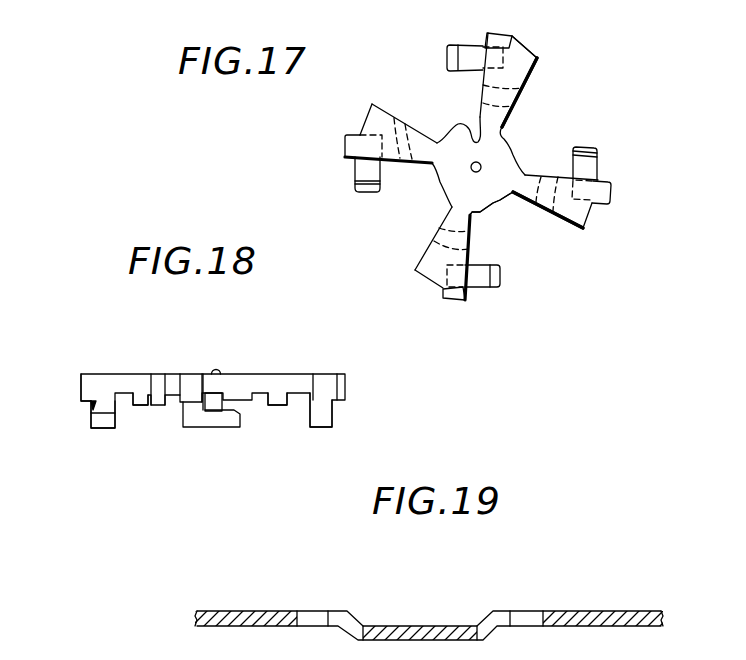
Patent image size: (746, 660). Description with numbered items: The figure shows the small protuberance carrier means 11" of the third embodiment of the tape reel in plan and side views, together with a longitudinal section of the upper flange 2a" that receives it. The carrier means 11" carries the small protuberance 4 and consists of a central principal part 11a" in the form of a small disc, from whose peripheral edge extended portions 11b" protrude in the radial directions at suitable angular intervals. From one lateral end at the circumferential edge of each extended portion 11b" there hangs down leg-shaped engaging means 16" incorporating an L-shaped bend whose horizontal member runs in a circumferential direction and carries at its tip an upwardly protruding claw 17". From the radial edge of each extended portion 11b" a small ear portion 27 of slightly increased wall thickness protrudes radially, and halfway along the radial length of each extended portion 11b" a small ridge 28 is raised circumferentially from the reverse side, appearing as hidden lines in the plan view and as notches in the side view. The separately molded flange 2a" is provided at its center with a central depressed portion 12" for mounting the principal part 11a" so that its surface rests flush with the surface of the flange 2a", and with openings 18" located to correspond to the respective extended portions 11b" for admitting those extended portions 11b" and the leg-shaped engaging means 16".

In FIG. 17, the carrier means 11 is at (547, 103).
In FIG. 18, the carrier means 11 is at (243, 367).
In FIG. 17, the principal part 11a is at (490, 199).
In FIG. 18, the principal part 11a is at (167, 372).
In FIG. 17, the extended portions 11b is at (519, 66).
In FIG. 18, the extended portions 11b is at (322, 373).
In FIG. 17, the small protuberance 4 is at (472, 158).
In FIG. 18, the small protuberance 4 is at (213, 370).
In FIG. 17, the small ear portion 27 is at (347, 137).
In FIG. 18, the small ear portion 27 is at (81, 388).
In FIG. 17, the leg-shaped engaging means 16 is at (356, 170).
In FIG. 18, the leg-shaped engaging means 16 is at (92, 407).
In FIG. 17, the claw 17 is at (363, 188).
In FIG. 18, the claw 17 is at (105, 410).
In FIG. 17, the small ridge 28 is at (412, 120).
In FIG. 18, the small ridge 28 is at (142, 405).
In FIG. 19, the openings 18 is at (318, 615).
In FIG. 19, the central depressed portion 12 is at (415, 625).
In FIG. 19, the flange 2a is at (608, 617).